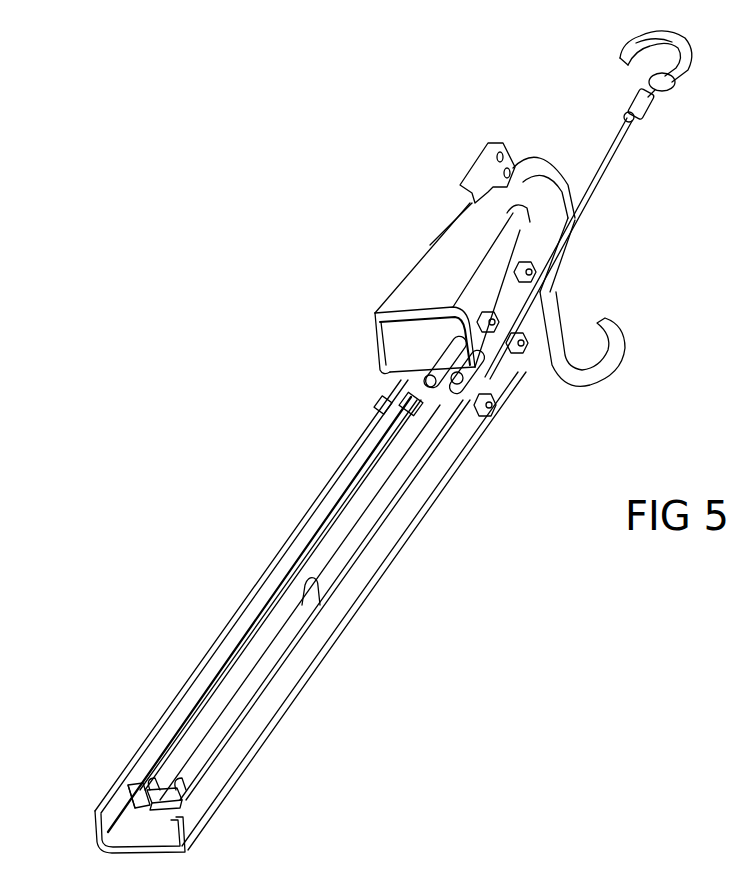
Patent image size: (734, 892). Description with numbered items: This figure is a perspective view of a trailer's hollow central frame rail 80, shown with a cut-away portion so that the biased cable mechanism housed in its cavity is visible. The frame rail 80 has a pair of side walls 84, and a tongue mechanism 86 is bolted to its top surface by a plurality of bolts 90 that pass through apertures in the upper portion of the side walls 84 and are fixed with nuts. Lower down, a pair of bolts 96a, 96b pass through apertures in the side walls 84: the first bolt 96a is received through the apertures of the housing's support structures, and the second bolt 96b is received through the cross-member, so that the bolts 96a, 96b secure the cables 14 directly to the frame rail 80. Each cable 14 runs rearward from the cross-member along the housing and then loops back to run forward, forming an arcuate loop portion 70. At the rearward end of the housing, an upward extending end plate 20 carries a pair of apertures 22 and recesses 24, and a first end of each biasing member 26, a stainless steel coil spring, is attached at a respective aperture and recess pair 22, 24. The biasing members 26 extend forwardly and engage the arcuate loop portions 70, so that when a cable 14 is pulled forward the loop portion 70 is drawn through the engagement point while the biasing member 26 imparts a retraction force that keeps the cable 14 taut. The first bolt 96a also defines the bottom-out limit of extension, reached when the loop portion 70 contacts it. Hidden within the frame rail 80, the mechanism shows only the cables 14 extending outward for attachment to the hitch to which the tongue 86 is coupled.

The cable 14 is at (593, 187).
The end plate 20 is at (175, 800).
The apertures 22 is at (143, 807).
The recesses 24 is at (173, 788).
The biasing member 26 is at (255, 647).
The arcuate loop portion 70 is at (415, 398).
The central frame rail 80 is at (213, 820).
The side walls 84 is at (353, 593).
The tongue mechanism 86 is at (430, 257).
The bolts 90 is at (497, 322).
The first bolt 96a is at (493, 405).
The second bolt 96b is at (543, 337).